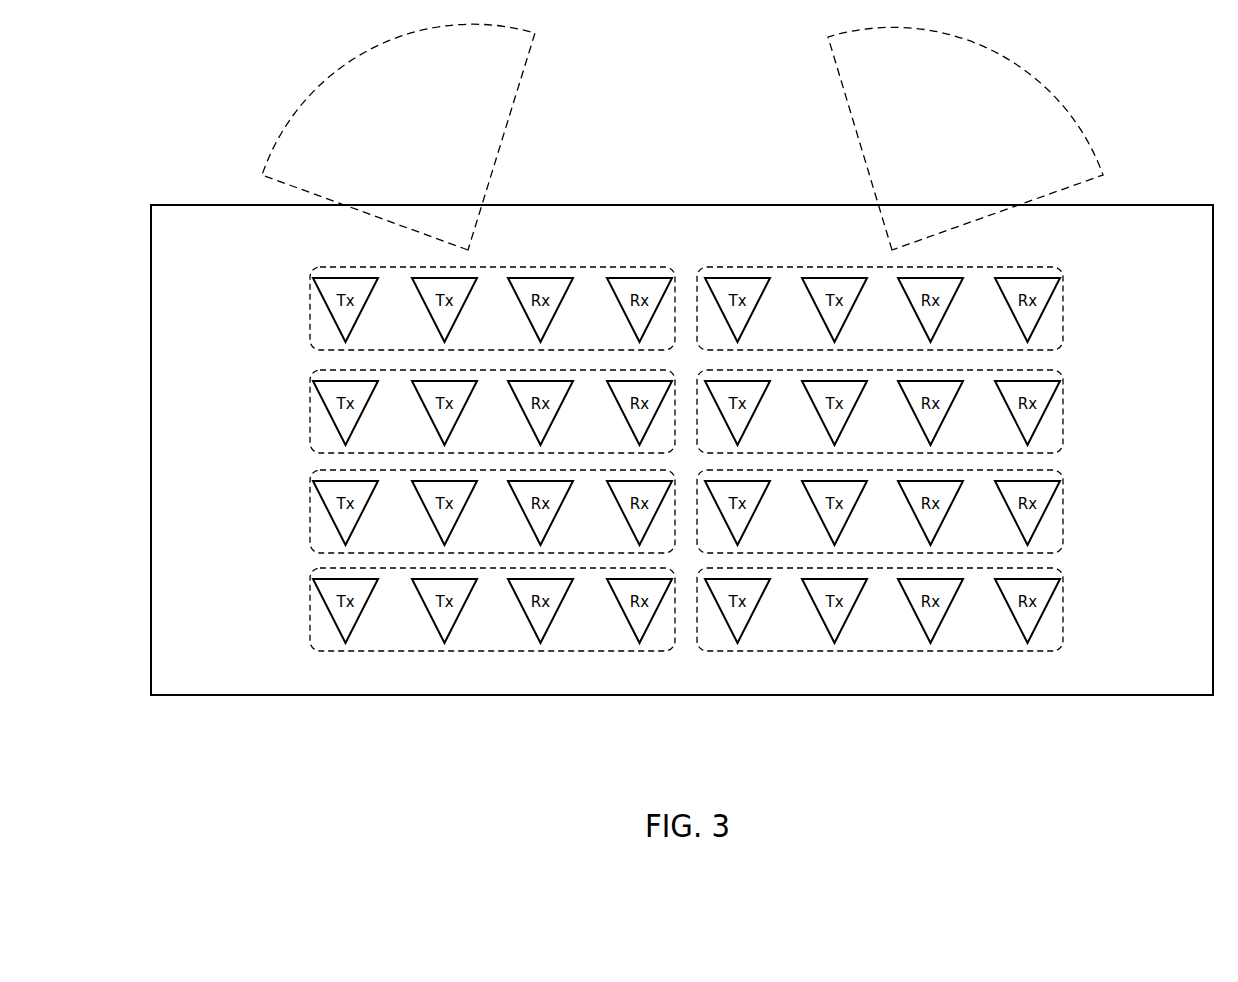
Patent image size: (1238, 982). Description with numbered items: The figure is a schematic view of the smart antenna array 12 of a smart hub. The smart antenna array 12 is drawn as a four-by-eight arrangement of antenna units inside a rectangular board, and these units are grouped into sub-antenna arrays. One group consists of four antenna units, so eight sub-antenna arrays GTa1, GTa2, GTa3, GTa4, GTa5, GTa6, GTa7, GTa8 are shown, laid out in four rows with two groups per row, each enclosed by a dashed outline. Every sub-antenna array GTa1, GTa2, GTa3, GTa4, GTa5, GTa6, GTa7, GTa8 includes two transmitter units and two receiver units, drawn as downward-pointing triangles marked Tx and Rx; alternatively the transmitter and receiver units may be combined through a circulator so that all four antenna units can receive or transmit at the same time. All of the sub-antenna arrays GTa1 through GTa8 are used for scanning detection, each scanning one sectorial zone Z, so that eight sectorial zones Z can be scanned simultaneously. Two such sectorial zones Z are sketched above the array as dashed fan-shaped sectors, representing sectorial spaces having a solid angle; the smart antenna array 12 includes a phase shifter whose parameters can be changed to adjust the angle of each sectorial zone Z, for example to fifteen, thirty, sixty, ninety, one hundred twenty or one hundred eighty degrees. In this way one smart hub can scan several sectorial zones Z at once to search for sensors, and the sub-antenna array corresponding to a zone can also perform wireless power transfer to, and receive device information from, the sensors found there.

The smart antenna array 12 is at (151, 240).
The sectorial zone Z is at (276, 155).
The sub-antenna array GTa1 is at (310, 308).
The sub-antenna array GTa2 is at (1063, 308).
The sub-antenna array GTa3 is at (310, 411).
The sub-antenna array GTa4 is at (1063, 411).
The sub-antenna array GTa5 is at (310, 511).
The sub-antenna array GTa6 is at (1063, 511).
The sub-antenna array GTa7 is at (310, 609).
The sub-antenna array GTa8 is at (1063, 609).